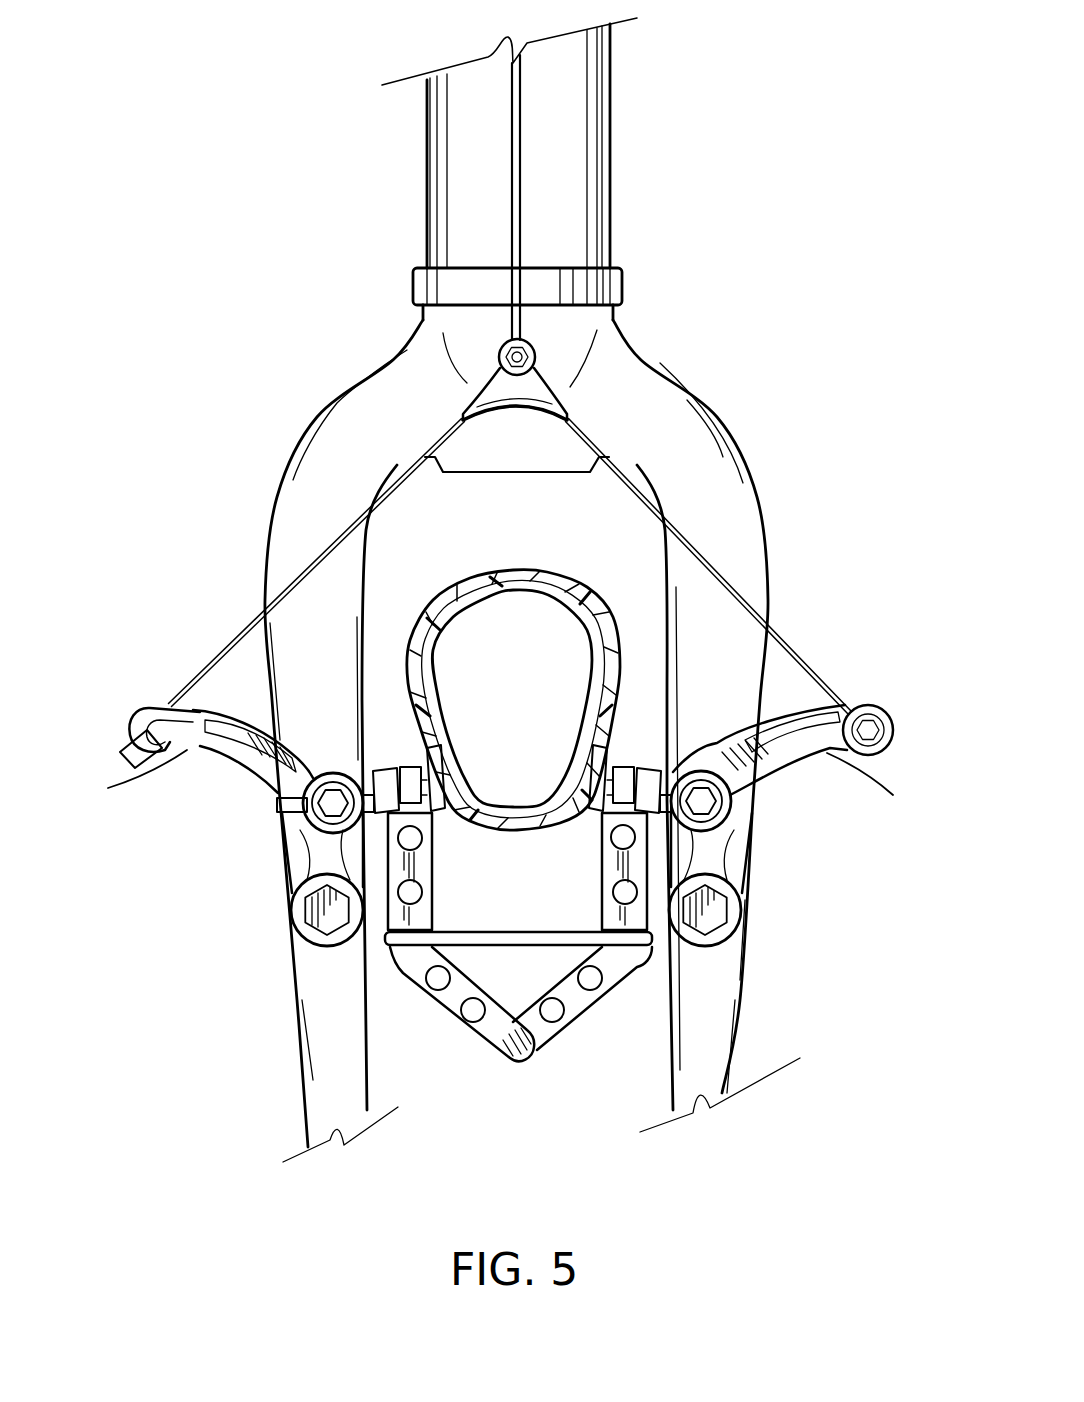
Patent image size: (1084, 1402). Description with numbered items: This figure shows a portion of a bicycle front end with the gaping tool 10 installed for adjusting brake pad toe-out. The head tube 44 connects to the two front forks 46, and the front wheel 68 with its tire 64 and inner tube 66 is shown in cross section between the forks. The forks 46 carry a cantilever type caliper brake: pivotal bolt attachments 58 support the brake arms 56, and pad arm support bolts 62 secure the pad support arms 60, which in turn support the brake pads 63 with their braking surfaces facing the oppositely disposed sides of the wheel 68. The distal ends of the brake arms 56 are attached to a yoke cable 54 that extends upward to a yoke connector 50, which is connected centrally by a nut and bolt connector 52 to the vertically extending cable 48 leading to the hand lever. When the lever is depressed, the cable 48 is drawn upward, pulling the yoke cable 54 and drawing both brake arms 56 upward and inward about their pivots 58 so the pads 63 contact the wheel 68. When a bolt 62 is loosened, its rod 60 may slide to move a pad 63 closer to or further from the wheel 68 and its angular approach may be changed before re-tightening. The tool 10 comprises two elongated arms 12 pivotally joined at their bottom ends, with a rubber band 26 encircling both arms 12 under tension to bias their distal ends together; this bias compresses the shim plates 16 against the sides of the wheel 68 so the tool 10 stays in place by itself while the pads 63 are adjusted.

The gaping tool 10 is at (588, 1022).
The elongated arm 12 is at (547, 1043).
The shim plate 16 is at (577, 763).
The rubber band 26 is at (513, 935).
The head tube 44 is at (610, 133).
The front fork 46 is at (710, 403).
The vertically extending cable 48 is at (522, 227).
The yoke connector 50 is at (498, 397).
The nut and bolt connector 52 is at (505, 352).
The yoke cable 54 is at (797, 640).
The brake arm 56 is at (506, 787).
The pivotal bolt attachment 58 is at (313, 937).
The pad support arm 60 is at (280, 807).
The pad arm support bolt 62 is at (330, 808).
The brake pad 63 is at (398, 766).
The tire 64 is at (503, 573).
The inner tube 66 is at (497, 582).
The wheel 68 is at (509, 830).